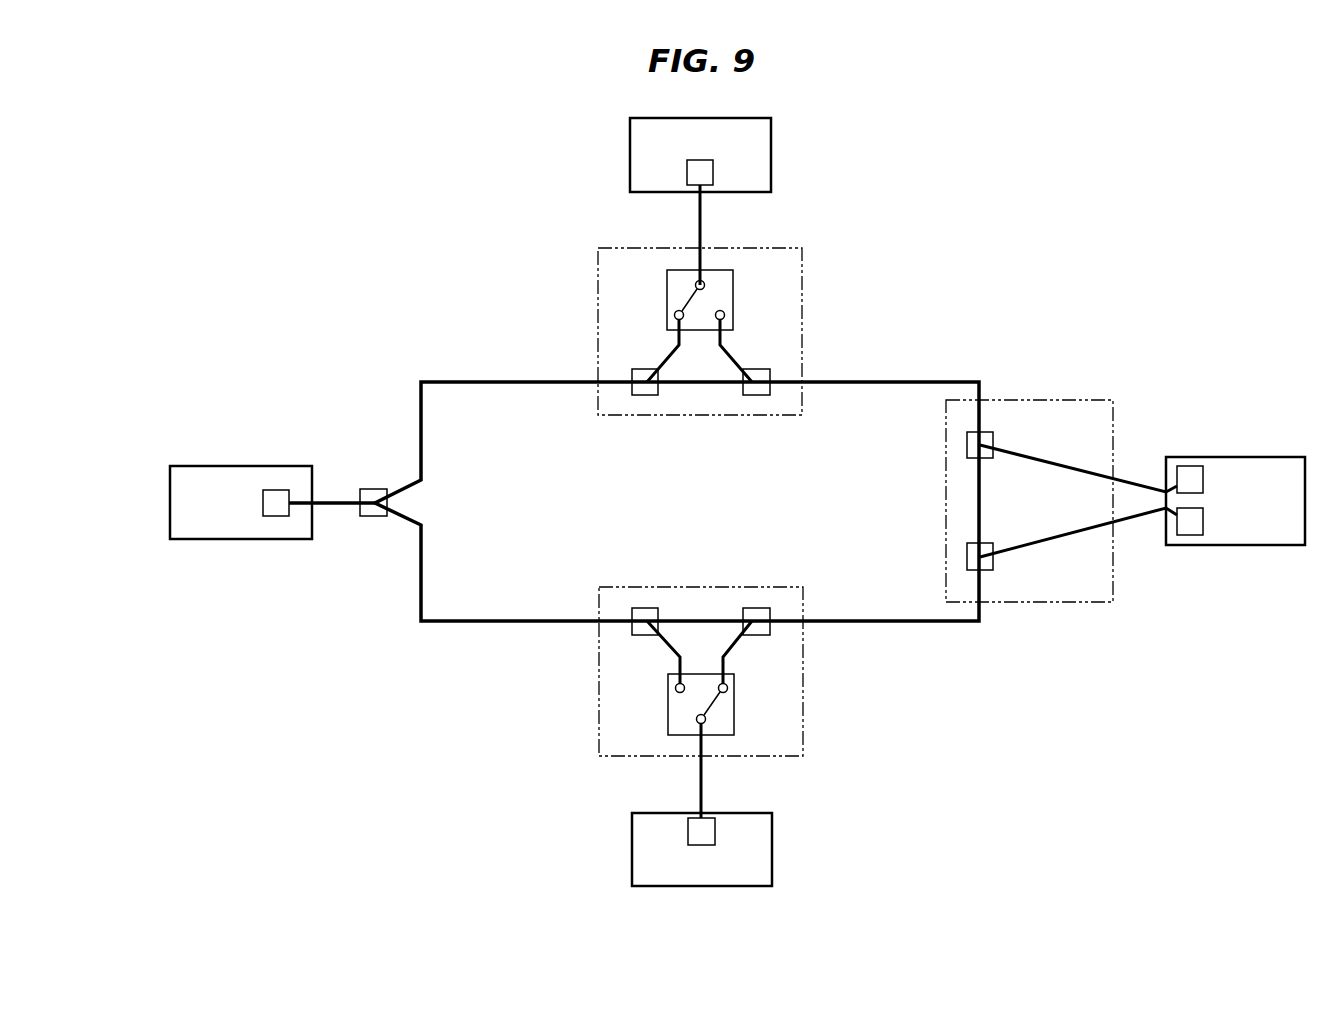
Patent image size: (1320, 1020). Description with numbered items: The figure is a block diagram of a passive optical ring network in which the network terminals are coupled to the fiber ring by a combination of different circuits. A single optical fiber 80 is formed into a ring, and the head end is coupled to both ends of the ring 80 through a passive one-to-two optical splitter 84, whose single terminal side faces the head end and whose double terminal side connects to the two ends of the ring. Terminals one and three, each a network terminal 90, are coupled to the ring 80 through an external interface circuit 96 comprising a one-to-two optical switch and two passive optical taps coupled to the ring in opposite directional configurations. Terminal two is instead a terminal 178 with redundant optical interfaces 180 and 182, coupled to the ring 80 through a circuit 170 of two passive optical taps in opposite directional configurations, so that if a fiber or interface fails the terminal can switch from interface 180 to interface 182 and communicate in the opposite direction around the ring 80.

The optical fiber ring 80 is at (891, 380).
The passive 1:2 optical splitter 84 is at (373, 488).
The network terminal 90 is at (772, 158).
The circuit 96 is at (598, 313).
The circuit 170 is at (1031, 399).
The terminal 178 is at (1231, 456).
The optical interface 180 is at (1188, 465).
The optical interface 182 is at (235, 465).